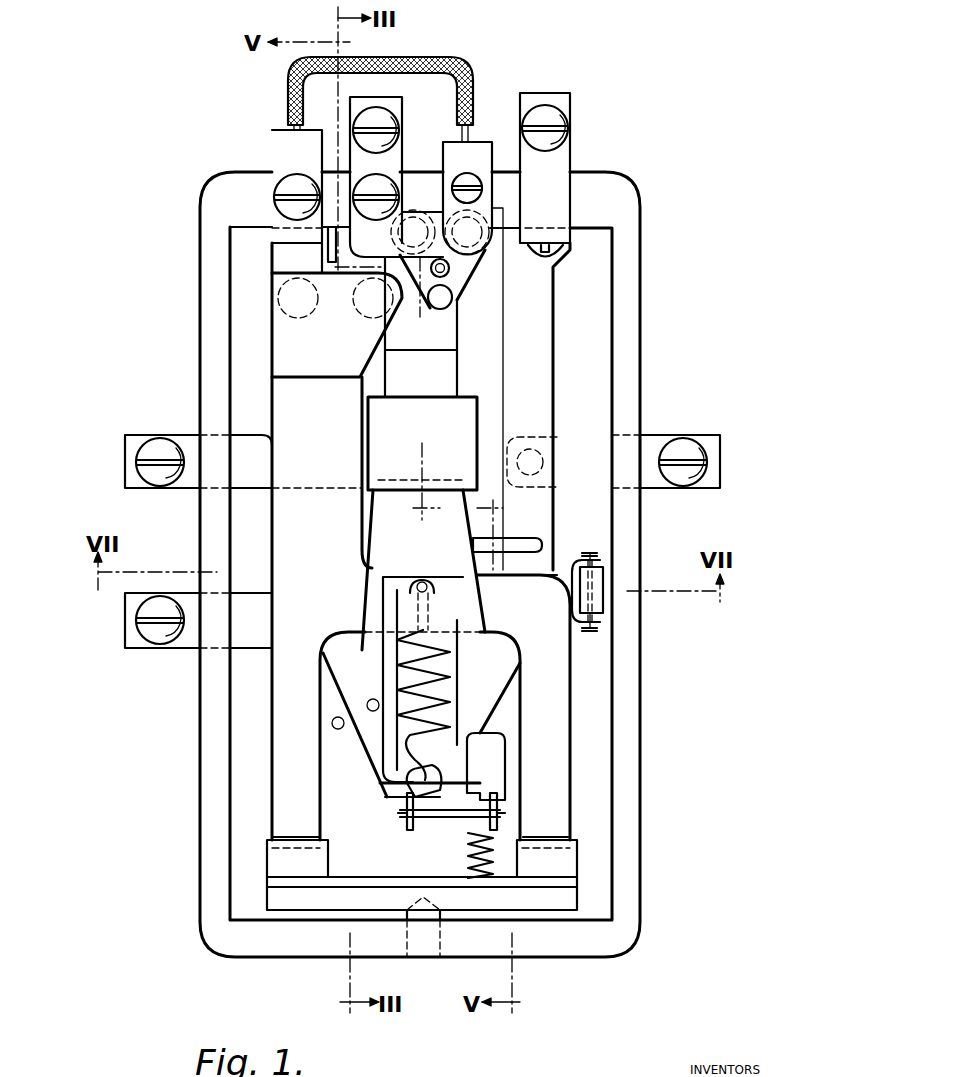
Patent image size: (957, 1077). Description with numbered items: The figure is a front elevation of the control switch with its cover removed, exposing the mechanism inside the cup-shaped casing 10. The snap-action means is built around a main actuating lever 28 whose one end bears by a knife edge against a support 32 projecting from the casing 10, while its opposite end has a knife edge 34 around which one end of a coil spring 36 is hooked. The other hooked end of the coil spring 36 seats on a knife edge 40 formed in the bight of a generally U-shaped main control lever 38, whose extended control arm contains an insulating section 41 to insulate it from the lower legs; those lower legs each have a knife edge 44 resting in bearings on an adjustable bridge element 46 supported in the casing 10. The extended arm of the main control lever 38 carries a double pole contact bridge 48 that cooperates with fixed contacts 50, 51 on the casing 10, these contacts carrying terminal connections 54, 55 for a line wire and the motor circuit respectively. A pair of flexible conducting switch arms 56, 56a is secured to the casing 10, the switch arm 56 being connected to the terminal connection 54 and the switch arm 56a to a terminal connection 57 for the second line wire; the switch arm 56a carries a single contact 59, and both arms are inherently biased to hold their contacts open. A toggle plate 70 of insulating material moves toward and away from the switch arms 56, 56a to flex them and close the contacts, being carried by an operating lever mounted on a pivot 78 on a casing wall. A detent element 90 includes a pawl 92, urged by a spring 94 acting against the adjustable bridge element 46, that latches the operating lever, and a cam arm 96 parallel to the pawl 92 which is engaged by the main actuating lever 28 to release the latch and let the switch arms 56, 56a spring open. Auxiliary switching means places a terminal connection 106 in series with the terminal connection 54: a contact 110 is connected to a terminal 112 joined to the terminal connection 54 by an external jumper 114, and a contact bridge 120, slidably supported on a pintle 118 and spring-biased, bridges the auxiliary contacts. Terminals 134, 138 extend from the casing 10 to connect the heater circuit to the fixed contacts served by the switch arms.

The casing 10 is at (622, 205).
The main actuating lever 28 is at (385, 557).
The support 32 is at (462, 407).
The knife edge 34 is at (410, 788).
The coil spring 36 is at (440, 652).
The main control lever 38 is at (283, 742).
The knife edge 40 is at (418, 593).
The insulating section 41 is at (282, 408).
The knife edge 44 is at (265, 862).
The adjustable bridge element 46 is at (567, 885).
The double pole contact bridge 48 is at (293, 337).
The fixed contact 50 is at (285, 304).
The fixed contact 51 is at (368, 312).
The terminal connection 54 is at (280, 147).
The terminal connection 55 is at (128, 458).
The flexible switch arm 56 is at (328, 252).
The flexible switch arm 56a is at (548, 388).
The terminal connection 57 is at (572, 104).
The contact 59 is at (537, 458).
The toggle plate 70 is at (522, 538).
The pivot 78 is at (590, 552).
The detent element 90 is at (425, 822).
The pawl 92 is at (405, 812).
The spring 94 is at (467, 860).
The cam arm 96 is at (500, 810).
The terminal connection 106 is at (400, 104).
The contact 110 is at (485, 258).
The terminal 112 is at (472, 142).
The external jumper 114 is at (465, 66).
The pintle 118 is at (450, 272).
The contact bridge 120 is at (452, 306).
The terminal 134 is at (712, 437).
The terminal 138 is at (128, 632).